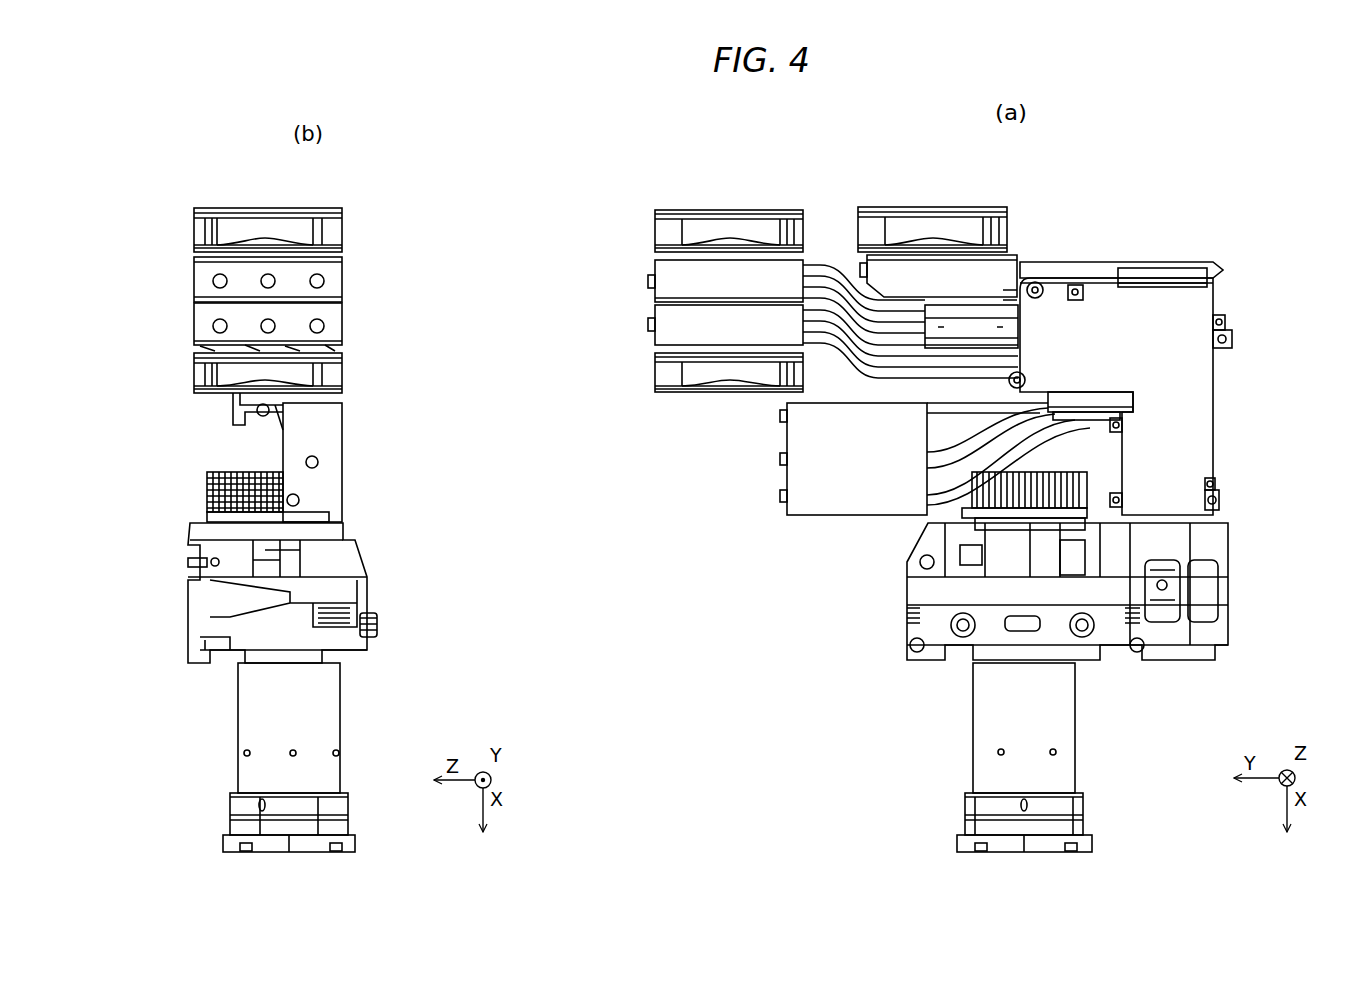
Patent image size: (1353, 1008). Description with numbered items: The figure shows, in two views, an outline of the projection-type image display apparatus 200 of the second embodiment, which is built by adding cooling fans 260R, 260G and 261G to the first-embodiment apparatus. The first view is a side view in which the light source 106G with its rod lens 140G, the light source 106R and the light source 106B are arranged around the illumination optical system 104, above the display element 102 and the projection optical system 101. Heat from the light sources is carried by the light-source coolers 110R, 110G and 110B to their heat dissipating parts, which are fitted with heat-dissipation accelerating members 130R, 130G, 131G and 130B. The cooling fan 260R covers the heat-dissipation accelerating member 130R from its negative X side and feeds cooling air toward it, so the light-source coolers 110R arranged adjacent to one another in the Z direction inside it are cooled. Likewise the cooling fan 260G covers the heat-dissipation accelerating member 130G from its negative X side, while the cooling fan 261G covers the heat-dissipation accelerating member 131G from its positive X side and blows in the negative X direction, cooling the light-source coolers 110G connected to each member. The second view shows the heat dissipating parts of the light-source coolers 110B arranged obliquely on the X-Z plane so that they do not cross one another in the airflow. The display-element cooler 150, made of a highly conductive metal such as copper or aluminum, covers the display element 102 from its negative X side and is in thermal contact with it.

The projection-type image display apparatus 200 is at (474, 246).
The cooling fan 260G is at (343, 238).
The heat-dissipation accelerating member 130G is at (343, 279).
The heat-dissipation accelerating member 131G is at (343, 319).
The cooling fan 261G is at (343, 378).
The heat-dissipation accelerating member 130B is at (343, 451).
The heat-dissipation accelerating member 130R is at (941, 318).
The cooling fan 260R is at (935, 207).
The light-source cooler 110G is at (817, 306).
The light-source cooler 110R is at (1095, 262).
The light-source cooler 110B is at (956, 397).
The rod lens 140G is at (1000, 300).
The light source 106G is at (1003, 297).
The light source 106R is at (1222, 276).
The light source 106B is at (1135, 401).
The illumination optical system 104 is at (1215, 414).
The display-element cooler 150 is at (1088, 477).
The display element 102 is at (975, 519).
The projection optical system 101 is at (341, 716).